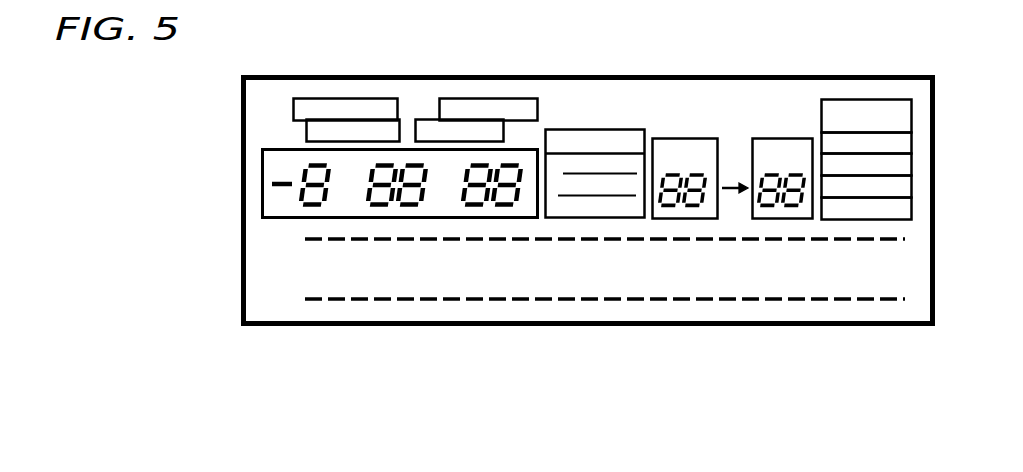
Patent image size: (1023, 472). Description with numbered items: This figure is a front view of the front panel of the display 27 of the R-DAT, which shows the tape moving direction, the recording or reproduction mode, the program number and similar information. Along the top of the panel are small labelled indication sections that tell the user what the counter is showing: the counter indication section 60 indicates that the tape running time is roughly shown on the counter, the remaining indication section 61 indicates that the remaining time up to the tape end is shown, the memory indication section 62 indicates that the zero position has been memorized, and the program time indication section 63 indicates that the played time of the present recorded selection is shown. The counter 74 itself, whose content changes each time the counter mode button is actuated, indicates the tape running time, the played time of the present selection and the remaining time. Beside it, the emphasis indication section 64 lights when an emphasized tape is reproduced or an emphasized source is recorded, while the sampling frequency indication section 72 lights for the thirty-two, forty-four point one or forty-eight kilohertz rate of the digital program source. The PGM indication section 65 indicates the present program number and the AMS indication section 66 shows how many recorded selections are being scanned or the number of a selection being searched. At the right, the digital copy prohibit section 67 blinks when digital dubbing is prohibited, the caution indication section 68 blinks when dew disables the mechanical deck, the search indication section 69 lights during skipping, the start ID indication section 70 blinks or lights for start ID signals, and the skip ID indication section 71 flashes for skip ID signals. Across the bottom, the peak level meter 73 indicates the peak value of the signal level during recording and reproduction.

The display 27 is at (561, 68).
The counter indication section 60 is at (306, 130).
The remaining indication section 61 is at (330, 98).
The memory indication section 62 is at (431, 119).
The program time indication section 63 is at (487, 99).
The emphasis indication section 64 is at (593, 129).
The PGM indication section 65 is at (672, 138).
The AMS indication section 66 is at (777, 138).
The digital copy prohibit section 67 is at (872, 99).
The caution indication section 68 is at (912, 142).
The search indication section 69 is at (911, 166).
The start ID indication section 70 is at (912, 182).
The skip ID indication section 71 is at (912, 204).
The sampling frequency indication section 72 is at (572, 212).
The peak level meter 73 is at (537, 285).
The counter 74 is at (262, 193).